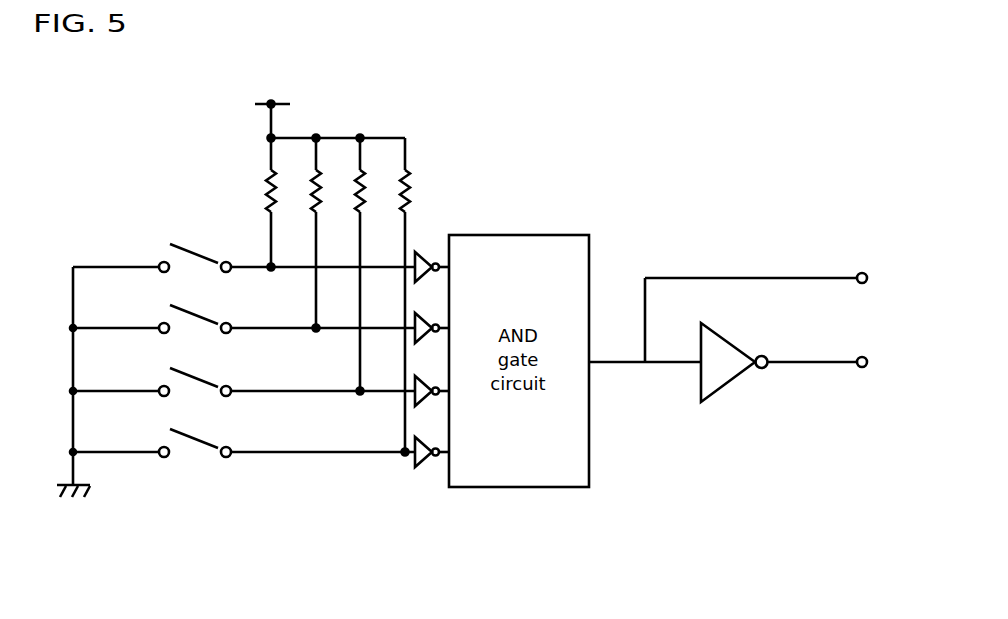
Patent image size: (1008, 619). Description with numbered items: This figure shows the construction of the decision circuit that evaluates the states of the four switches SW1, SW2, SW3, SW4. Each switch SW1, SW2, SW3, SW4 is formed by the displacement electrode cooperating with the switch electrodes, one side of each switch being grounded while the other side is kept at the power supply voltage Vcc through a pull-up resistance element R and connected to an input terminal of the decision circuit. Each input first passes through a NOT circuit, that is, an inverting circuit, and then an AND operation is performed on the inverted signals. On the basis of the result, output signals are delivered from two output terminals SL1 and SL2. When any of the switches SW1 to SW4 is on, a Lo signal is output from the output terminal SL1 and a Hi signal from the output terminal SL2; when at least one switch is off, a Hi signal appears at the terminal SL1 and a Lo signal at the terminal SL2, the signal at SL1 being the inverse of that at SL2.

The power supply voltage Vcc is at (306, 113).
The pull-up resistance element R is at (349, 295).
The switch SW1 is at (244, 253).
The switch SW2 is at (244, 311).
The switch SW3 is at (244, 373).
The switch SW4 is at (244, 433).
The output terminal SL1 is at (811, 362).
The output terminal SL2 is at (755, 317).